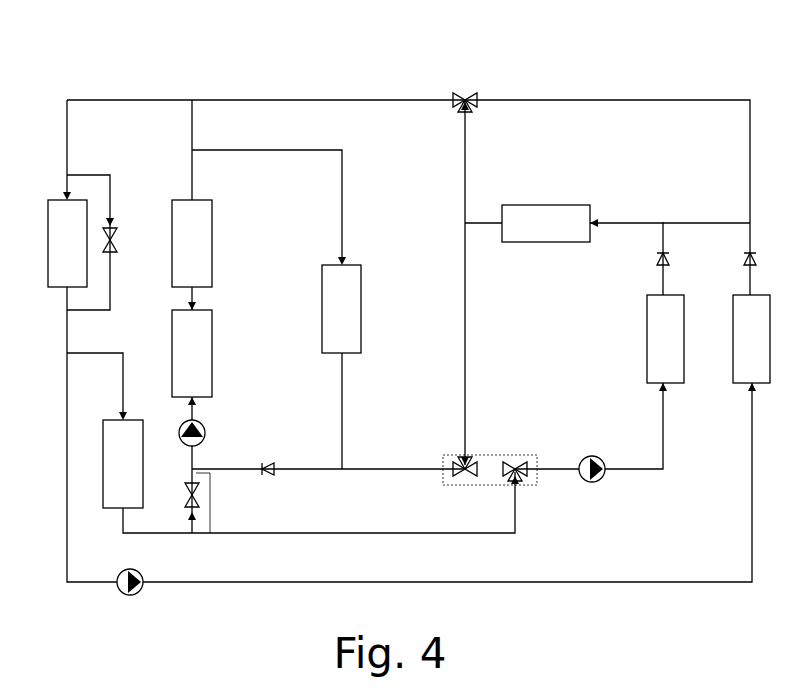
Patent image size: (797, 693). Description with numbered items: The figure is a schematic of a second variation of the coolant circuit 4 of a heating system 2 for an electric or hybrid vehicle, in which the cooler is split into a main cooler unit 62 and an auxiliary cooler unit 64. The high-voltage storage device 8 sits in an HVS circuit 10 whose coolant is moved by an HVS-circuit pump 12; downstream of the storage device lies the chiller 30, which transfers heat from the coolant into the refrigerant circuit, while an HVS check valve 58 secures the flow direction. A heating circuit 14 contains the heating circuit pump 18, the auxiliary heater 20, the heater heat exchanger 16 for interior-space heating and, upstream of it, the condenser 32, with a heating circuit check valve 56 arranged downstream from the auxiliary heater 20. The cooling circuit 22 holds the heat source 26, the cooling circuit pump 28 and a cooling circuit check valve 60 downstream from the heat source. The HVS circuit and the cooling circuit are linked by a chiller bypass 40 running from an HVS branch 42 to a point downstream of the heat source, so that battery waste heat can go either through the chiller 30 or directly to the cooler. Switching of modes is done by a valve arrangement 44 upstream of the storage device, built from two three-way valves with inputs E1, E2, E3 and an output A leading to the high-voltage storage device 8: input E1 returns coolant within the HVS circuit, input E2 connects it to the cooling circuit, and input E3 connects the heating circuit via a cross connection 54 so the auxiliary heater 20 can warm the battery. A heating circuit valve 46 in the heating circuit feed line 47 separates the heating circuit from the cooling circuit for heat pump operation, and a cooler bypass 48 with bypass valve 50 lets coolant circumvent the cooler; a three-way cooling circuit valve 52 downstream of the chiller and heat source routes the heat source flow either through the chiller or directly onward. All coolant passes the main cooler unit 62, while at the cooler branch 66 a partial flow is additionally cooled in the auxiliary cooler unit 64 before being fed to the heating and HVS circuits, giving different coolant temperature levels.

The heating system 2 is at (90, 70).
The coolant circuit 4 is at (128, 94).
The high-voltage storage device 8 is at (665, 339).
The HVS circuit 10 is at (468, 270).
The HVS-circuit pump 12 is at (598, 456).
The heating circuit 14 is at (338, 220).
The heater heat exchanger 16 is at (192, 243).
The heating circuit pump 18 is at (206, 426).
The auxiliary heater 20 is at (341, 309).
The cooling circuit 22 is at (418, 106).
The heat source 26 is at (751, 339).
The cooling circuit pump 28 is at (121, 570).
The chiller 30 is at (546, 223).
The condenser 32 is at (192, 353).
The chiller bypass 40 is at (748, 218).
The HVS branch 42 is at (662, 218).
The valve arrangement 44 is at (522, 452).
The heating circuit valve 46 is at (186, 490).
The heating circuit feed line 47 is at (212, 498).
The cooler bypass 48 is at (116, 192).
The bypass valve 50 is at (118, 234).
The cooling circuit valve 52 is at (470, 92).
The cross connection 54 is at (394, 464).
The heating circuit check valve 56 is at (264, 462).
The HVS check valve 58 is at (654, 258).
The cooling circuit check valve 60 is at (742, 258).
The main cooler unit 62 is at (67, 243).
The auxiliary cooler unit 64 is at (123, 464).
The cooler branch 66 is at (66, 356).
The input E1 is at (470, 454).
The input E2 is at (508, 480).
The input E3 is at (456, 466).
The output A is at (530, 476).